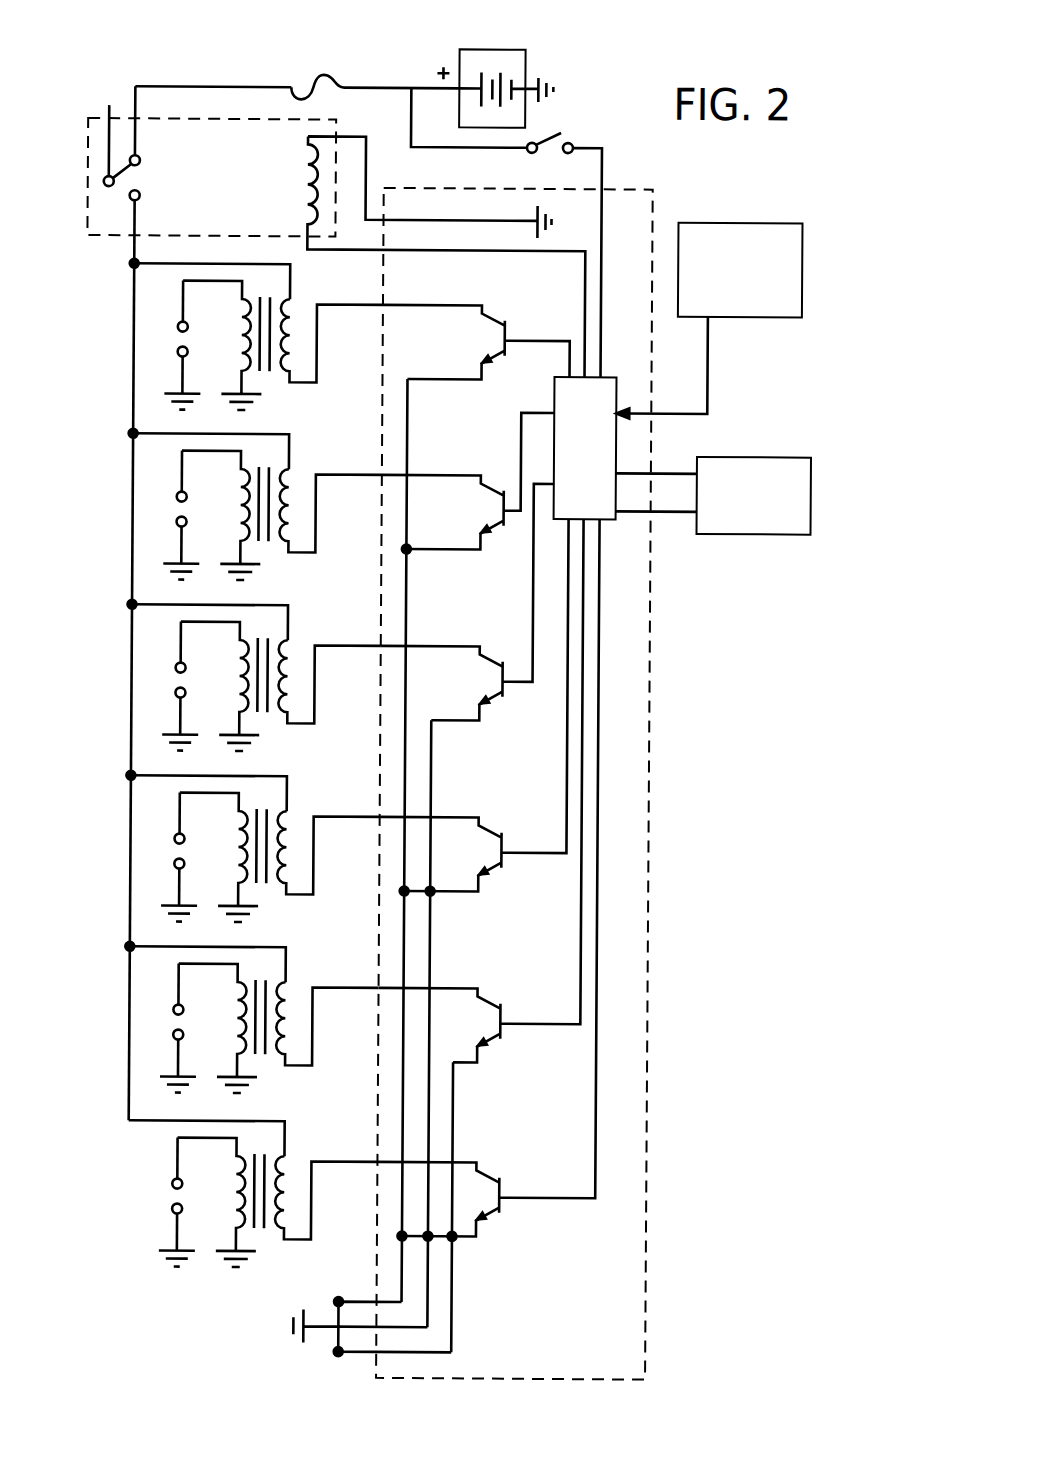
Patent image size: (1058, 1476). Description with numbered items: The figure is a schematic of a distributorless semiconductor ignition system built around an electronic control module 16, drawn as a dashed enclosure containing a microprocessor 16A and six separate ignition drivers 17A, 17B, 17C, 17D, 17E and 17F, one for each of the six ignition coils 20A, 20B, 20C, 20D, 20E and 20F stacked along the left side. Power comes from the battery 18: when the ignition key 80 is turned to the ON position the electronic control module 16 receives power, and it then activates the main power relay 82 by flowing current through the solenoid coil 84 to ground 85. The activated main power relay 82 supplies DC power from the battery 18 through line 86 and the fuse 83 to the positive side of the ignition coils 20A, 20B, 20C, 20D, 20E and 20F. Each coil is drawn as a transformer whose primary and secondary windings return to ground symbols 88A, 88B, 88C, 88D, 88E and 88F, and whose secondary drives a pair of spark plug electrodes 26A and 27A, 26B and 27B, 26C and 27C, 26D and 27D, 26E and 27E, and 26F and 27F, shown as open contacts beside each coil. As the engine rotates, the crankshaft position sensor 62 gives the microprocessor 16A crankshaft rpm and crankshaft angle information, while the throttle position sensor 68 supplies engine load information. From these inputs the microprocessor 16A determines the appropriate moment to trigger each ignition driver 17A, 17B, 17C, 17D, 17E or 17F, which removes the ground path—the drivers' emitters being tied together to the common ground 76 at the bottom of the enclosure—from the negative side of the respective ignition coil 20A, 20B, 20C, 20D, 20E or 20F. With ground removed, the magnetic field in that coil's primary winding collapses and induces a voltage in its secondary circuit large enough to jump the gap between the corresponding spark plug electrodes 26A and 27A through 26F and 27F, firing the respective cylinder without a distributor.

The electronic control module 16 is at (652, 788).
The microprocessor 16A is at (555, 388).
The ignition driver 17A is at (511, 326).
The ignition driver 17B is at (514, 528).
The ignition driver 17C is at (509, 696).
The ignition driver 17D is at (509, 867).
The ignition driver 17E is at (509, 1038).
The ignition driver 17F is at (509, 1212).
The battery 18 is at (505, 49).
The ignition coil 20A is at (286, 401).
The ignition coil 20B is at (281, 541).
The ignition coil 20C is at (280, 712).
The ignition coil 20D is at (279, 883).
The ignition coil 20E is at (278, 1054).
The ignition coil 20F is at (277, 1222).
The spark plug electrode 26A is at (178, 323).
The spark plug electrode 26B is at (163, 475).
The spark plug electrode 26C is at (162, 646).
The spark plug electrode 26D is at (160, 817).
The spark plug electrode 26E is at (159, 988).
The spark plug electrode 26F is at (158, 1162).
The spark plug electrode 27A is at (178, 354).
The spark plug electrode 27B is at (162, 539).
The spark plug electrode 27C is at (161, 710).
The spark plug electrode 27D is at (160, 881).
The spark plug electrode 27E is at (159, 1052).
The spark plug electrode 27F is at (158, 1226).
The crankshaft position sensor 62 is at (812, 478).
The throttle position sensor 68 is at (802, 240).
The ground 76 is at (296, 1326).
The ignition key 80 is at (558, 136).
The main power relay 82 is at (87, 172).
The fuse 83 is at (332, 80).
The solenoid coil 84 is at (306, 160).
The ground 85 is at (549, 208).
The line 86 is at (130, 258).
The ground 88A is at (172, 410).
The ground 88B is at (132, 569).
The ground 88C is at (131, 740).
The ground 88D is at (130, 911).
The ground 88E is at (129, 1082).
The ground 88F is at (128, 1256).